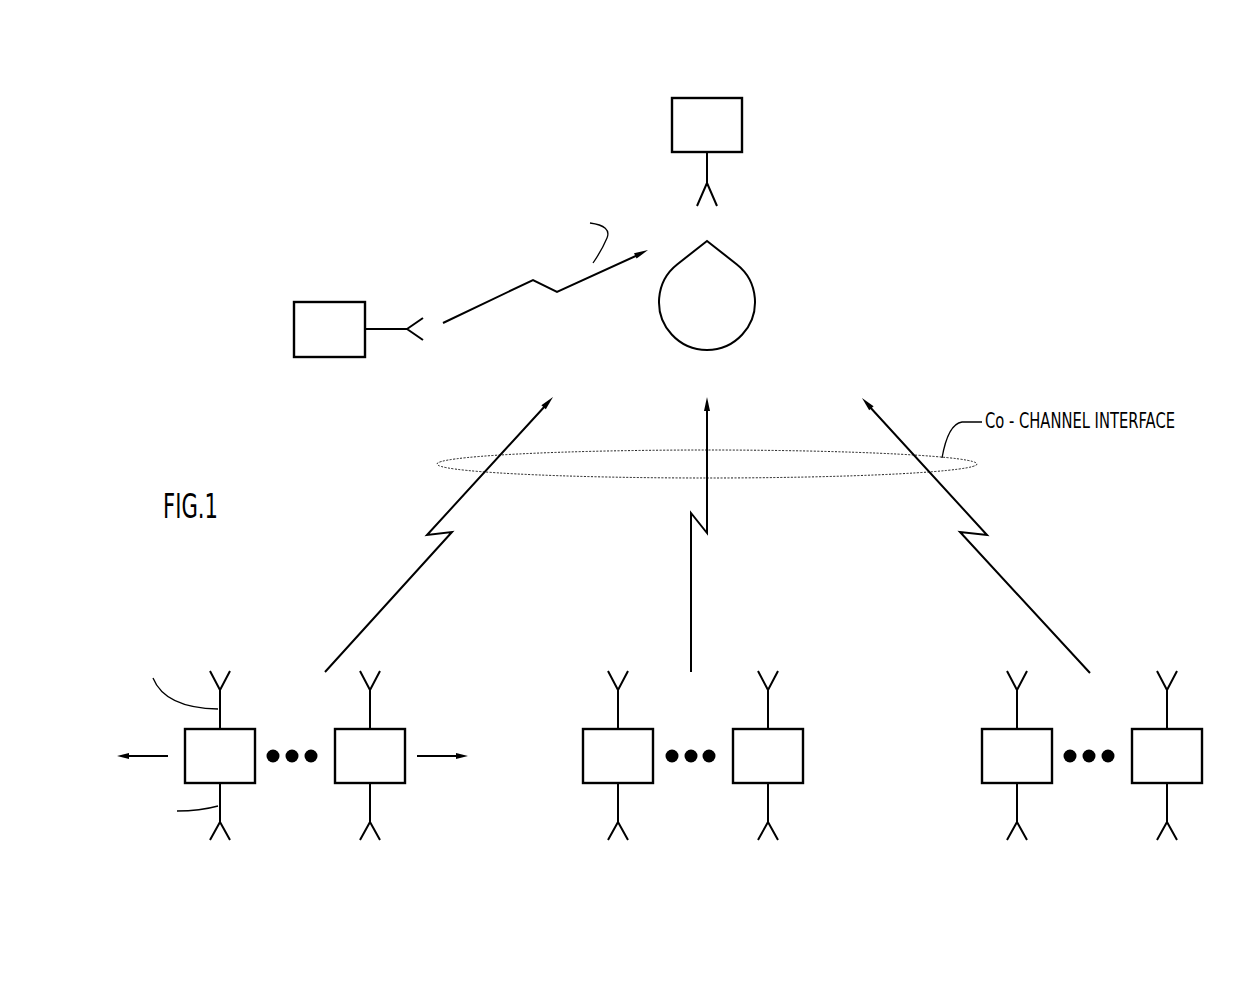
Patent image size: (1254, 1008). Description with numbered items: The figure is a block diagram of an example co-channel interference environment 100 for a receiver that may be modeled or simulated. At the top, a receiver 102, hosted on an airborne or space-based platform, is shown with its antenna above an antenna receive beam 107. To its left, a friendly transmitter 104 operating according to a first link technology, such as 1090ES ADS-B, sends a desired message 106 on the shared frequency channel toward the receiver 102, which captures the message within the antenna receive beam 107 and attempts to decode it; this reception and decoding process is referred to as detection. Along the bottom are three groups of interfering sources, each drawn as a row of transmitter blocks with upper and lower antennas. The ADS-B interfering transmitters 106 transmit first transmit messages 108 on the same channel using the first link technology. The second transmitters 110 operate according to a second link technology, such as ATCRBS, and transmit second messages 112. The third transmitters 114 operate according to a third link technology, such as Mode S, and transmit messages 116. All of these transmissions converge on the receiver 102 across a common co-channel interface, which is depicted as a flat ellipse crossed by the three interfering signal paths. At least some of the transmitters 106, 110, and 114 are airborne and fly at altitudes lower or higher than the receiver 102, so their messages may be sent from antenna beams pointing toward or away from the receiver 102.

The co-channel interference environment 100 is at (900, 152).
The receiver 102 is at (742, 138).
The friendly transmitter 104 is at (330, 302).
The desired message 106 is at (502, 308).
The antenna receive beam 107 is at (737, 260).
The first transmit messages 108 is at (387, 600).
The second transmitters 110 is at (581, 834).
The second messages 112 is at (692, 592).
The third transmitters 114 is at (978, 835).
The messages 116 is at (1027, 602).